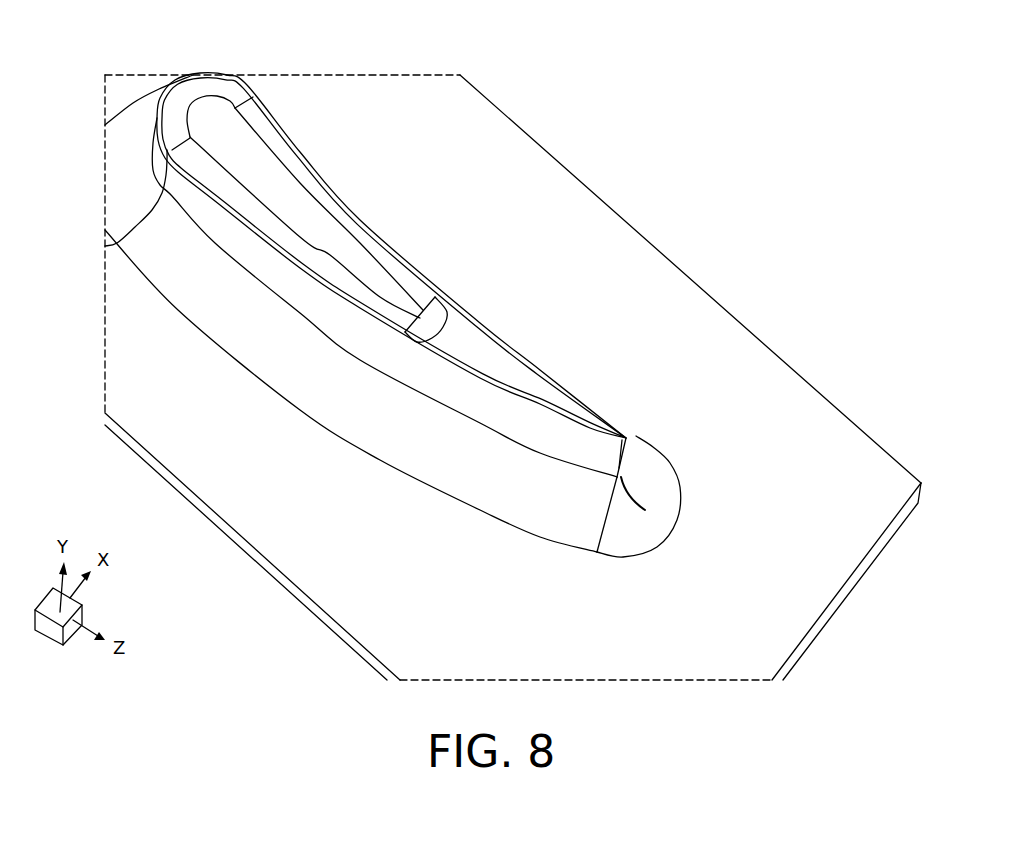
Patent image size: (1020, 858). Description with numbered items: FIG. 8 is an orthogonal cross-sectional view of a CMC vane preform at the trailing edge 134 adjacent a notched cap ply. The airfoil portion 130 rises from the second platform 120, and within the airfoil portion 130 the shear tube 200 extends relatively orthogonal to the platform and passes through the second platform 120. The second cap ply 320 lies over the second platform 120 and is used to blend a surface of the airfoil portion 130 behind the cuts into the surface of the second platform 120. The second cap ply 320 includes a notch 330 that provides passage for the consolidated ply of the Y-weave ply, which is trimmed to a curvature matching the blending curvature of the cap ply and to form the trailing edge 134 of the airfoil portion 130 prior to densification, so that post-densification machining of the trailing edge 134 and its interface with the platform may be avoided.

The second platform 120 is at (697, 279).
The airfoil portion 130 is at (463, 315).
The trailing edge 134 is at (623, 475).
The shear tube 200 is at (150, 117).
The second cap ply 320 is at (525, 377).
The notch 330 is at (643, 506).